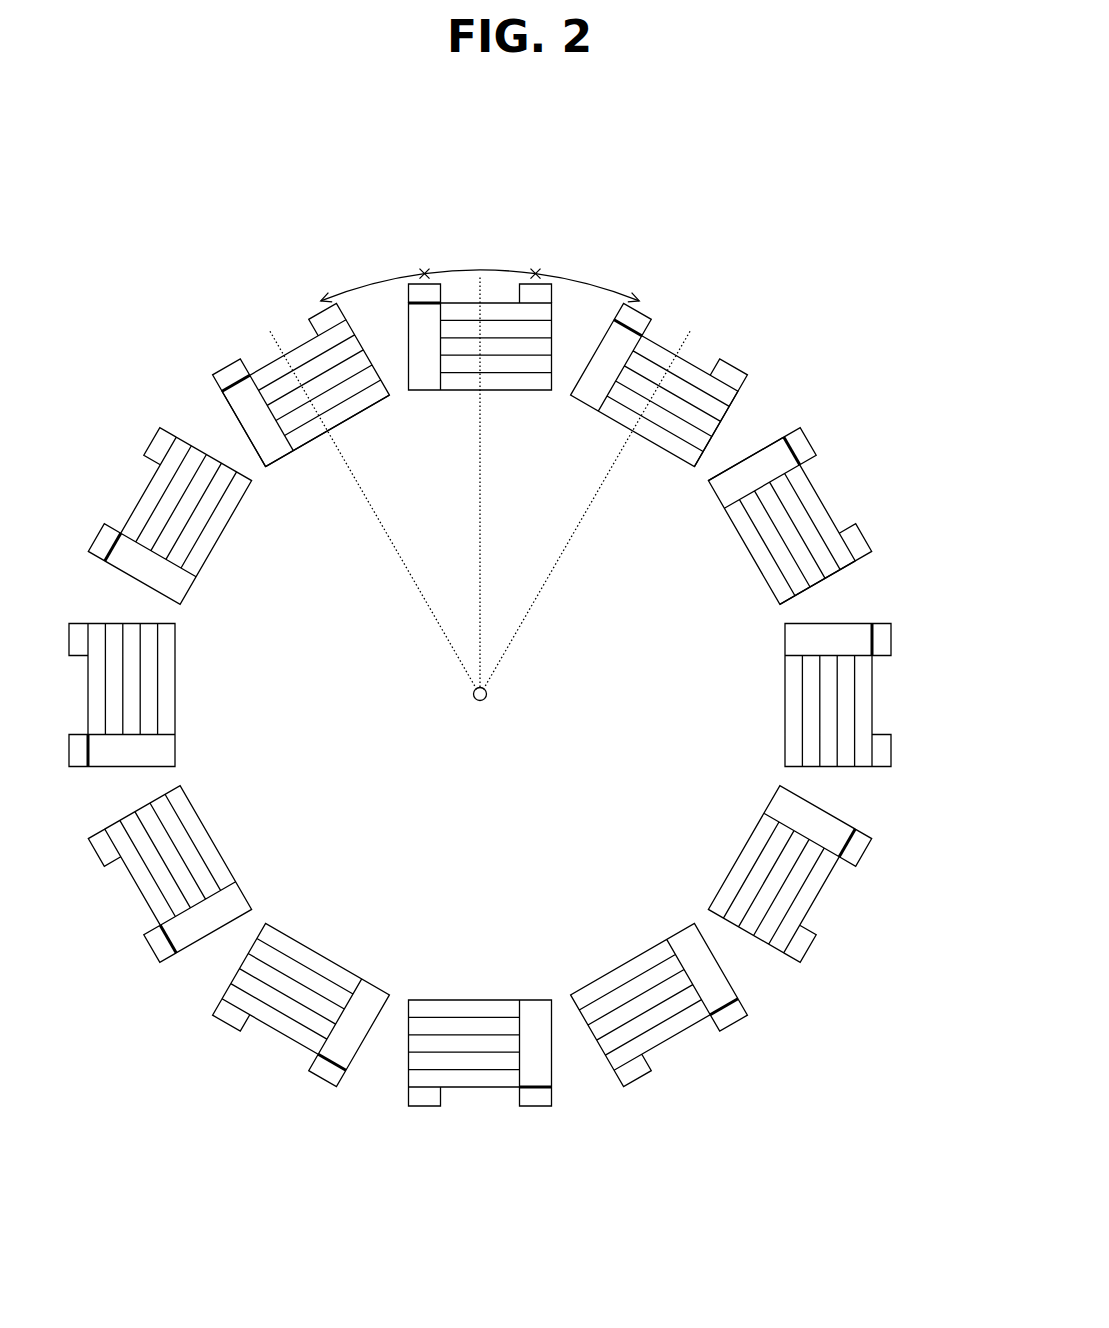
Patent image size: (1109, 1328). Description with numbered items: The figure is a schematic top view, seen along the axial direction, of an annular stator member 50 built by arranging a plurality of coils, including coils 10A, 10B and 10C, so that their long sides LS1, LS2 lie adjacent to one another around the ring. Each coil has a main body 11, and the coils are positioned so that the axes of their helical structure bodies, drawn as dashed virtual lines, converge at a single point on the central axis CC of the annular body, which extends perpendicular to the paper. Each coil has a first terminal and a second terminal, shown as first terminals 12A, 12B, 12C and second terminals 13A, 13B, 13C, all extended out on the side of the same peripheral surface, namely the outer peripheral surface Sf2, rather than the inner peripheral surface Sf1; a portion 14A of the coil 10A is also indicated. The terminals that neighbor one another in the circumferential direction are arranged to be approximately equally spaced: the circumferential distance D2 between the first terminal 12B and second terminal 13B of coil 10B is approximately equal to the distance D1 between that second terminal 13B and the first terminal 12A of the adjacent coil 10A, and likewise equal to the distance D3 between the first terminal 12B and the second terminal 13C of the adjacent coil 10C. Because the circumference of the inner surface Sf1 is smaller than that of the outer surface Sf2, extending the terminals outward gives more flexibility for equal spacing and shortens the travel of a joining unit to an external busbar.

The stator member 50 is at (744, 185).
The coil 10A is at (281, 405).
The coil 10B is at (486, 383).
The coil 10C is at (680, 396).
The main body 11 is at (183, 681).
The first terminal 12A is at (322, 318).
The first terminal 12B is at (552, 284).
The first terminal 12C is at (736, 362).
The second terminal 13A is at (233, 370).
The second terminal 13B is at (411, 290).
The second terminal 13C is at (643, 316).
The base portion of module A 14A is at (283, 463).
The long side LS1 is at (725, 428).
The long side LS2 is at (760, 470).
The central axis CC is at (480, 500).
The distance D1 is at (375, 280).
The distance D2 is at (480, 253).
The distance D3 is at (585, 277).
The first surface Sf1 is at (381, 419).
The second surface Sf2 is at (257, 336).